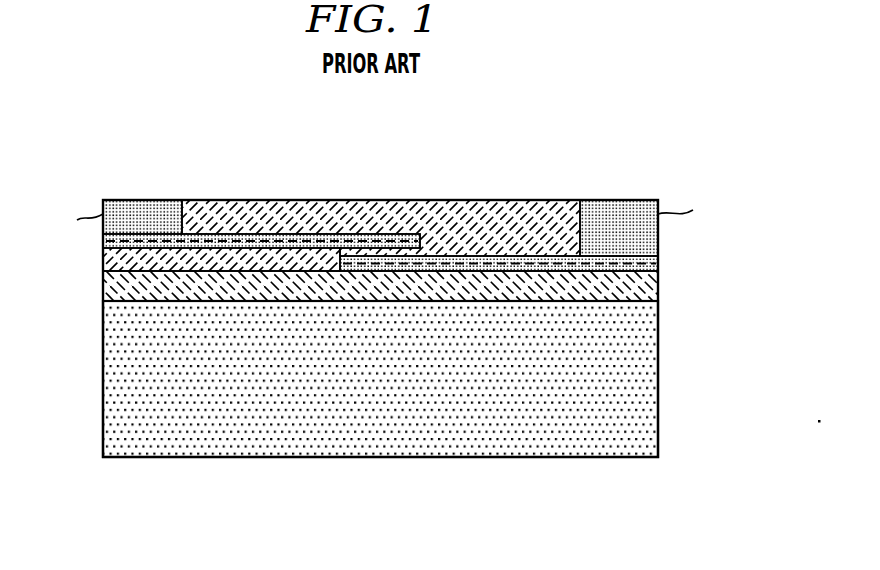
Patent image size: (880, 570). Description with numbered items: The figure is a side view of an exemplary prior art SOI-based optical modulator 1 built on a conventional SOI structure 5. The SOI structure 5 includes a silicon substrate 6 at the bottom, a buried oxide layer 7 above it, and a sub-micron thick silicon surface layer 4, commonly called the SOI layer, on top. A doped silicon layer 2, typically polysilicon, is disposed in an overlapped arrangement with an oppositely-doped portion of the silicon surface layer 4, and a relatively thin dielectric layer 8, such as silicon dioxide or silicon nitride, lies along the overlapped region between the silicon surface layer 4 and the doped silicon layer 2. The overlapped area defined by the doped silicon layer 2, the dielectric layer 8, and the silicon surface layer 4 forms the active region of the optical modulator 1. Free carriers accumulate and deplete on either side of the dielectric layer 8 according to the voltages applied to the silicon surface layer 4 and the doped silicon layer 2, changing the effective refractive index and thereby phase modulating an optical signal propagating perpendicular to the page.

The SOI-based optical modulator 1 is at (582, 88).
The doped silicon layer 2 is at (249, 234).
The silicon surface layer 4 is at (658, 265).
The SOI structure 5 is at (713, 258).
The silicon substrate 6 is at (103, 383).
The buried oxide layer 7 is at (103, 283).
The dielectric layer 8 is at (433, 255).